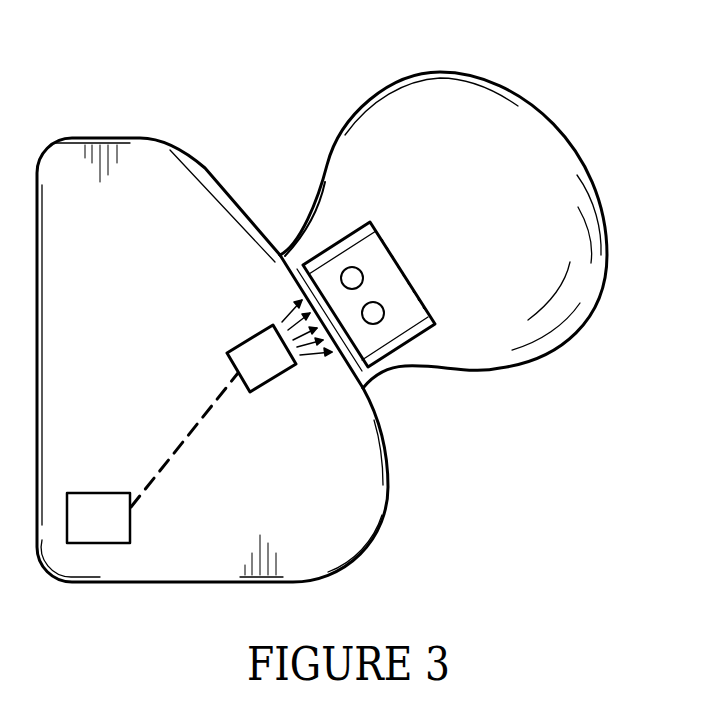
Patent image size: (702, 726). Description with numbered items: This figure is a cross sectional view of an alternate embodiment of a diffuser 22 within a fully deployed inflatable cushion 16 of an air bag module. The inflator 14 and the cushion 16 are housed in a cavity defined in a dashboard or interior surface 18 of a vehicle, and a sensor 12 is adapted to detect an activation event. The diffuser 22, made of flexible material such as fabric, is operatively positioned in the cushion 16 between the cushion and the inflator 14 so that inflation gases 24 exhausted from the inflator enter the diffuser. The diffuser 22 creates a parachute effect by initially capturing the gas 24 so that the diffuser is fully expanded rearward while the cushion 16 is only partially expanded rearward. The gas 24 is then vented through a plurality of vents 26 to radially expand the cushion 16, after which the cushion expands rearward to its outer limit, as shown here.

The sensor 12 is at (93, 546).
The inflator 14 is at (242, 344).
The inflatable cushion 16 is at (562, 138).
The interior surface 18 is at (386, 519).
The diffuser 22 is at (400, 267).
The inflation gases 24 is at (300, 306).
The vents 26 is at (352, 278).